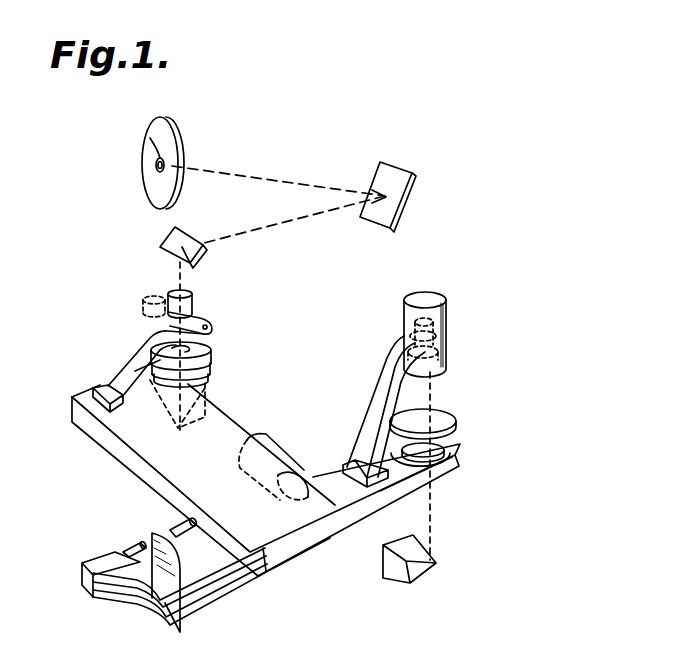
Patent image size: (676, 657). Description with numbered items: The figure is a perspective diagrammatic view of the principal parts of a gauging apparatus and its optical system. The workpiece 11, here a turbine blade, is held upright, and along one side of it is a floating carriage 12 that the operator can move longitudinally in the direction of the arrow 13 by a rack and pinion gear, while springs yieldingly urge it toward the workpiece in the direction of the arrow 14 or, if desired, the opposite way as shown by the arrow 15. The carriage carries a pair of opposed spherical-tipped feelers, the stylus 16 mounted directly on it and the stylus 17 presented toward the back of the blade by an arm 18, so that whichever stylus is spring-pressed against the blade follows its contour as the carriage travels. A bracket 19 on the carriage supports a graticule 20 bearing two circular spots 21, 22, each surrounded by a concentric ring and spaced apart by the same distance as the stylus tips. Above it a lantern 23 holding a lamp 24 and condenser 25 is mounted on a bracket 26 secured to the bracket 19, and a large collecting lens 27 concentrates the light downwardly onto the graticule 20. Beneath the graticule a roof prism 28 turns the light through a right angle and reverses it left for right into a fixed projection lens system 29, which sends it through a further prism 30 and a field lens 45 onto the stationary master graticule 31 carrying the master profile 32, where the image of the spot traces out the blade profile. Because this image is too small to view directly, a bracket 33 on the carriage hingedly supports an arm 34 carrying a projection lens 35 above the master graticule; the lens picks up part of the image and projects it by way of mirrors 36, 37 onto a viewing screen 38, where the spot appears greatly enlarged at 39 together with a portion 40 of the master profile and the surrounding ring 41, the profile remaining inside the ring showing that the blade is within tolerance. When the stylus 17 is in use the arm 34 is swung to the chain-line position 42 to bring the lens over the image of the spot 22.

The workpiece 11 is at (180, 605).
The carriage 12 is at (272, 528).
The arrow 13 is at (313, 554).
The arrow 14 is at (247, 427).
The arrow 15 is at (129, 485).
The stylus 16 is at (173, 533).
The stylus 17 is at (123, 552).
The arm 18 is at (127, 597).
The bracket 19 is at (395, 484).
The graticule 20 is at (444, 449).
The circular spot 21 is at (440, 458).
The circular spot 22 is at (425, 465).
The lantern 23 is at (447, 342).
The lamp 24 is at (447, 320).
The condenser 25 is at (450, 358).
The bracket 26 is at (377, 383).
The collecting lens 27 is at (443, 420).
The roof prism 28 is at (422, 557).
The projection lens system 29 is at (272, 455).
The prism 30 is at (207, 388).
The master graticule 31 is at (212, 357).
The master profile 32 is at (205, 345).
The bracket 33 is at (124, 366).
The arm 34 is at (200, 320).
The projection lens 35 is at (174, 290).
The mirror 36 is at (189, 235).
The mirror 37 is at (403, 170).
The viewing screen 38 is at (172, 128).
The enlarged spot 39 is at (155, 172).
The portion of master profile 40 is at (152, 150).
The ring 41 is at (154, 166).
The arm position 42 is at (143, 296).
The field lens 45 is at (210, 367).